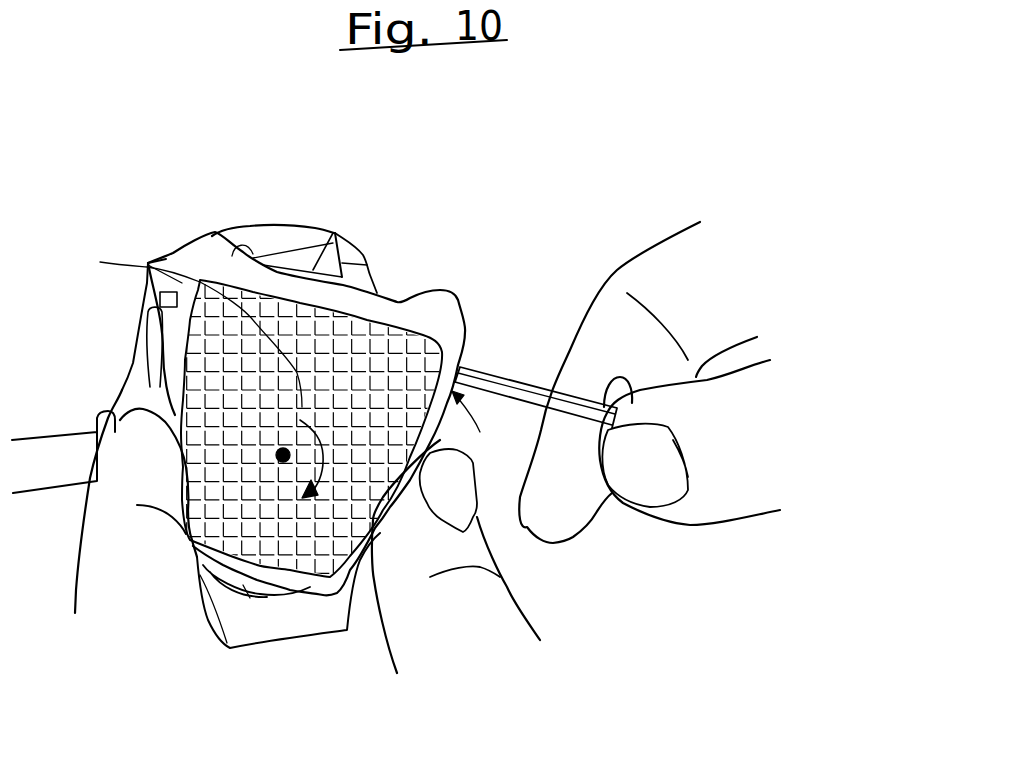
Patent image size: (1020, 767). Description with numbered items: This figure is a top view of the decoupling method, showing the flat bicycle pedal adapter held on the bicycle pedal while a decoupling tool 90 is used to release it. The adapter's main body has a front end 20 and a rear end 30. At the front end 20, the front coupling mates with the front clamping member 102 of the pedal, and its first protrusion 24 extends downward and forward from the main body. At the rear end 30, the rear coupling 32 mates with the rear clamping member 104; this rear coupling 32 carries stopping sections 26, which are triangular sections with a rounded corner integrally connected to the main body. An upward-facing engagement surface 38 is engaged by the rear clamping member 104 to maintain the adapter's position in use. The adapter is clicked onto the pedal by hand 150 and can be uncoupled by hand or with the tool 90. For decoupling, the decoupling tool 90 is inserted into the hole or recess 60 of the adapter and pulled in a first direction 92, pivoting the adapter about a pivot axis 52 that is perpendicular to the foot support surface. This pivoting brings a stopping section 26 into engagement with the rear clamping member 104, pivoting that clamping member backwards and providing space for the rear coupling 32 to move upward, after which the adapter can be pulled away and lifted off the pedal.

The front end 20 is at (313, 587).
The first protrusion 24 is at (230, 647).
The stopping sections 26 is at (233, 235).
The rear end 30 is at (268, 267).
The rear coupling 32 is at (310, 267).
The engagement surface 38 is at (341, 263).
The pivot axis 52 is at (273, 443).
The hole or recess 60 is at (479, 423).
The decoupling tool 90 is at (510, 387).
The first direction 92 is at (185, 377).
The front clamping member 102 is at (248, 587).
The rear clamping member 104 is at (173, 270).
The hand 150 is at (663, 280).